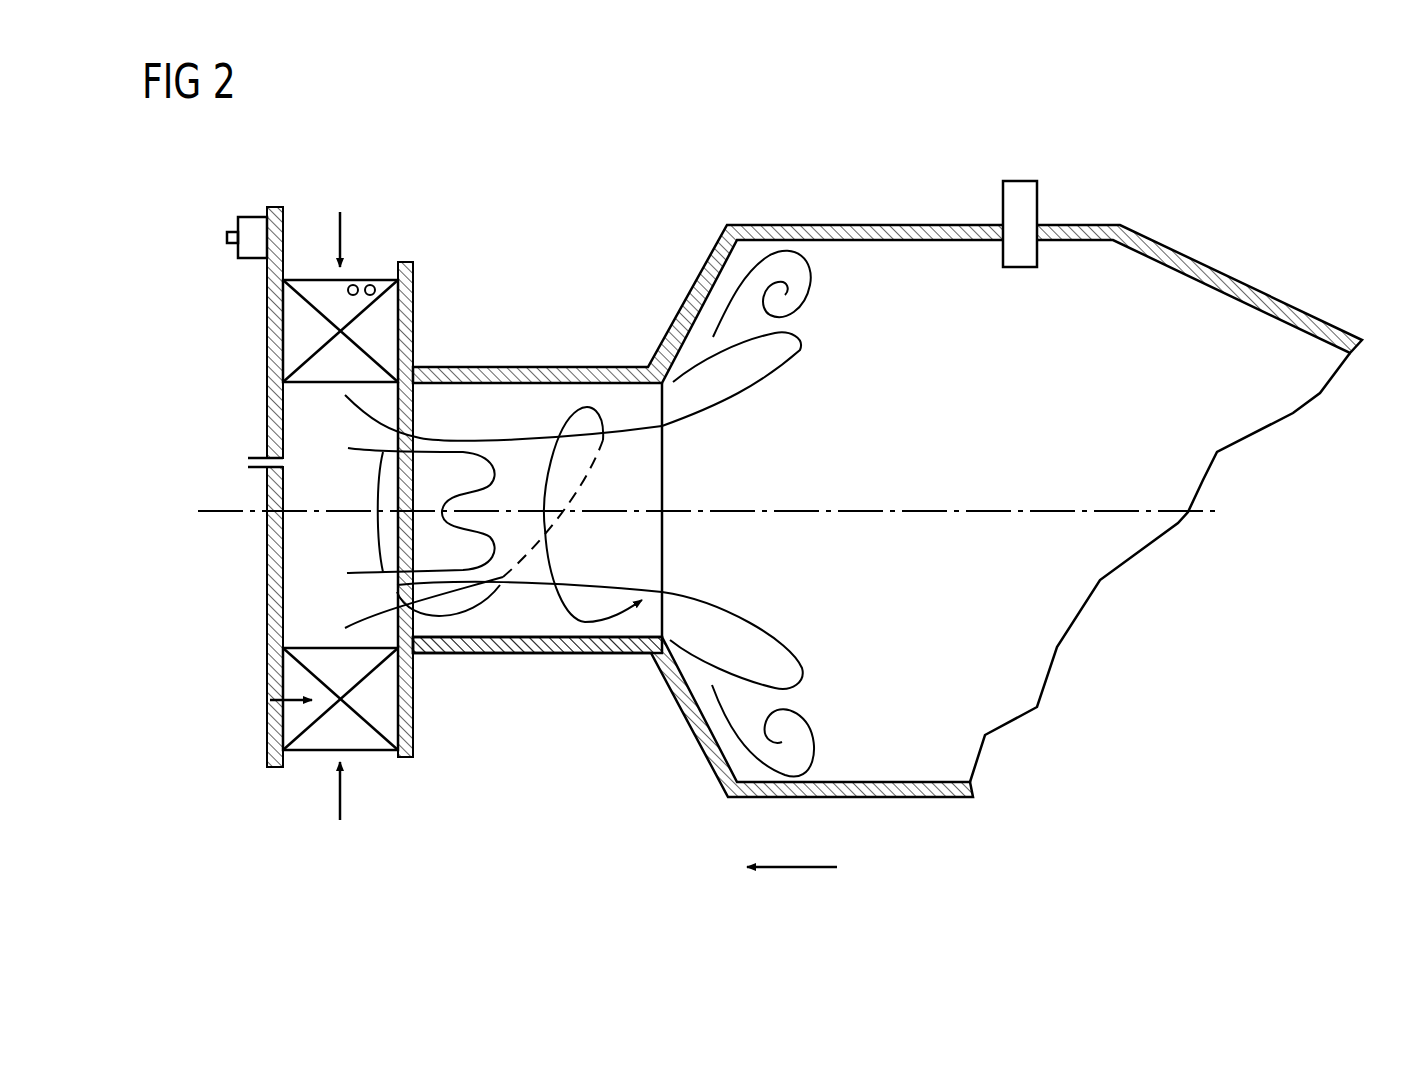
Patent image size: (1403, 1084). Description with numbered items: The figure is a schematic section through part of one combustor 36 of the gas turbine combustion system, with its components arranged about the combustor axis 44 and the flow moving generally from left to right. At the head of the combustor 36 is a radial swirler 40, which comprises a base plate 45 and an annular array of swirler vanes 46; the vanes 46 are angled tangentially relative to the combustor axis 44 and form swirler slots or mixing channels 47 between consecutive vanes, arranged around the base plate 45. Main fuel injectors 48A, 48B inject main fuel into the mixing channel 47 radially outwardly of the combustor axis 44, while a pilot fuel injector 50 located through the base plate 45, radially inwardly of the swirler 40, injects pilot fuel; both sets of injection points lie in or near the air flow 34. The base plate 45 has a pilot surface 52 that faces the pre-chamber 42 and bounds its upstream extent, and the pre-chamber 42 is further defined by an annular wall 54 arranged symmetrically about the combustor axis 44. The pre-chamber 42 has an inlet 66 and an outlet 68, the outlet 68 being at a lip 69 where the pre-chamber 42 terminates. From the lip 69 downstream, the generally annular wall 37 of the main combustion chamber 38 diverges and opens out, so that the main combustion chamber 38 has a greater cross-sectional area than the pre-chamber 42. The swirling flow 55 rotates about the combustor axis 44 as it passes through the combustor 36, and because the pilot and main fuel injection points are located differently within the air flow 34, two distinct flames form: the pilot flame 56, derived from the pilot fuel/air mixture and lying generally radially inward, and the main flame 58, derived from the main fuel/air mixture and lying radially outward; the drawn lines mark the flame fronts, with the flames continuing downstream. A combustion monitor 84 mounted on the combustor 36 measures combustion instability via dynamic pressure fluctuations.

The air flow 34 is at (340, 212).
The combustor 36 is at (1257, 232).
The inner wall 37 is at (873, 797).
The main combustion chamber 38 is at (905, 306).
The radial swirler 40 is at (270, 700).
The pre-chamber 42 is at (557, 627).
The combustor axis 44 is at (228, 511).
The base plate 45 is at (276, 623).
The swirler vanes 46 is at (290, 683).
The swirler slots 47 is at (390, 331).
The main fuel injector 48A is at (227, 237).
The main fuel injector 48B is at (353, 283).
The pilot fuel injector 50 is at (252, 461).
The pilot surface 52 is at (285, 576).
The annular wall 54 is at (620, 653).
The swirling flow 55 is at (462, 607).
The pilot flame 56 is at (490, 447).
The main flame 58 is at (795, 347).
The inlet 66 is at (400, 415).
The outlet 68 is at (665, 405).
The lip 69 is at (668, 637).
The combustion monitor 84 is at (1003, 200).